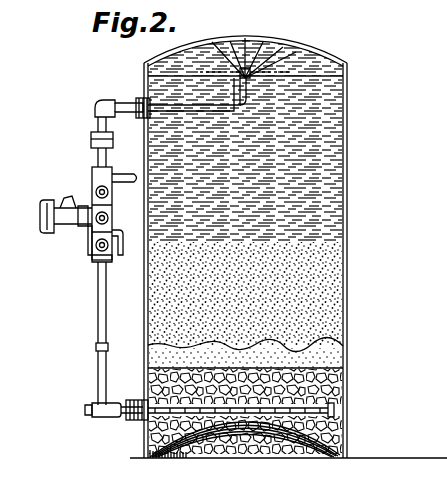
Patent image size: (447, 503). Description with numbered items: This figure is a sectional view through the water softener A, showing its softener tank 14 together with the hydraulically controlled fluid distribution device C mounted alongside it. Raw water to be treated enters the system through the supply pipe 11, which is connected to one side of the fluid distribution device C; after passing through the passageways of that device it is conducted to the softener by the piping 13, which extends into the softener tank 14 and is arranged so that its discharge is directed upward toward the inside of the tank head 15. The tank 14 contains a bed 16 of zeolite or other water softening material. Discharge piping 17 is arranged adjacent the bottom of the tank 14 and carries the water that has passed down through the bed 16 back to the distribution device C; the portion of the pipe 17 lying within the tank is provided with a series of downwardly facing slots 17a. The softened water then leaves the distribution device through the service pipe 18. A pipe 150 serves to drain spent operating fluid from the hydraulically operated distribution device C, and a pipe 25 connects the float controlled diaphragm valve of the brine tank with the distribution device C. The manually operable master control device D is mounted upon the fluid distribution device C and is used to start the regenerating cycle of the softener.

The softener tank 14 is at (347, 108).
The tank head 15 is at (262, 36).
The water softener A is at (315, 46).
The piping 13 is at (116, 100).
The supply pipe 11 is at (108, 218).
The pipe 25 is at (122, 177).
The fluid distribution device C is at (93, 256).
The master control device D is at (46, 228).
The pipe 150 is at (129, 254).
The service pipe 18 is at (110, 270).
The bed 16 is at (343, 312).
The discharge piping 17 is at (97, 321).
The slots 17a is at (322, 410).